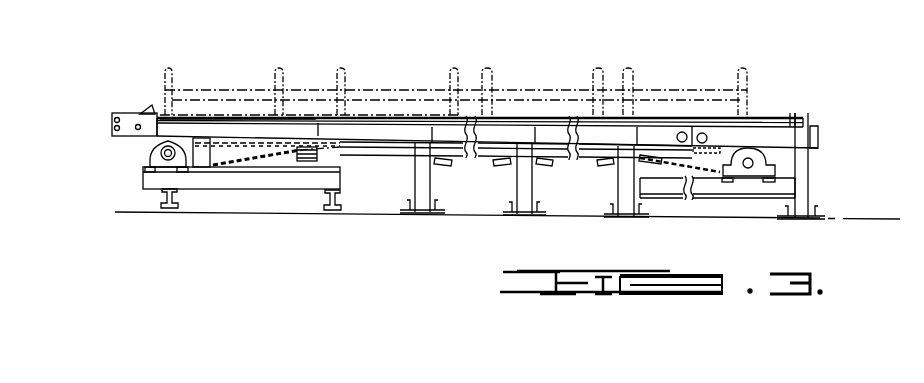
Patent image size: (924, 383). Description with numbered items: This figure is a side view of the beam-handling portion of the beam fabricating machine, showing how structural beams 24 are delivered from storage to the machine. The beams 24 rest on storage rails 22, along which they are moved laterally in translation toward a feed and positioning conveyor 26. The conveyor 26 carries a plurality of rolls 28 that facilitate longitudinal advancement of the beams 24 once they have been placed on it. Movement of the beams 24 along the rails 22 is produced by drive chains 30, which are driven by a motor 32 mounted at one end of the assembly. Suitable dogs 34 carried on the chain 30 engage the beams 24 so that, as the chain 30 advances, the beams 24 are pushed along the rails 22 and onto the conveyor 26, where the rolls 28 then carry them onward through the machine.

The storage rails 22 is at (759, 139).
The structural beams 24 is at (228, 85).
The feed and positioning conveyor 26 is at (128, 109).
The rolls 28 is at (297, 113).
The drive chains 30 is at (255, 160).
The motor 32 is at (782, 162).
The dogs 34 is at (459, 117).